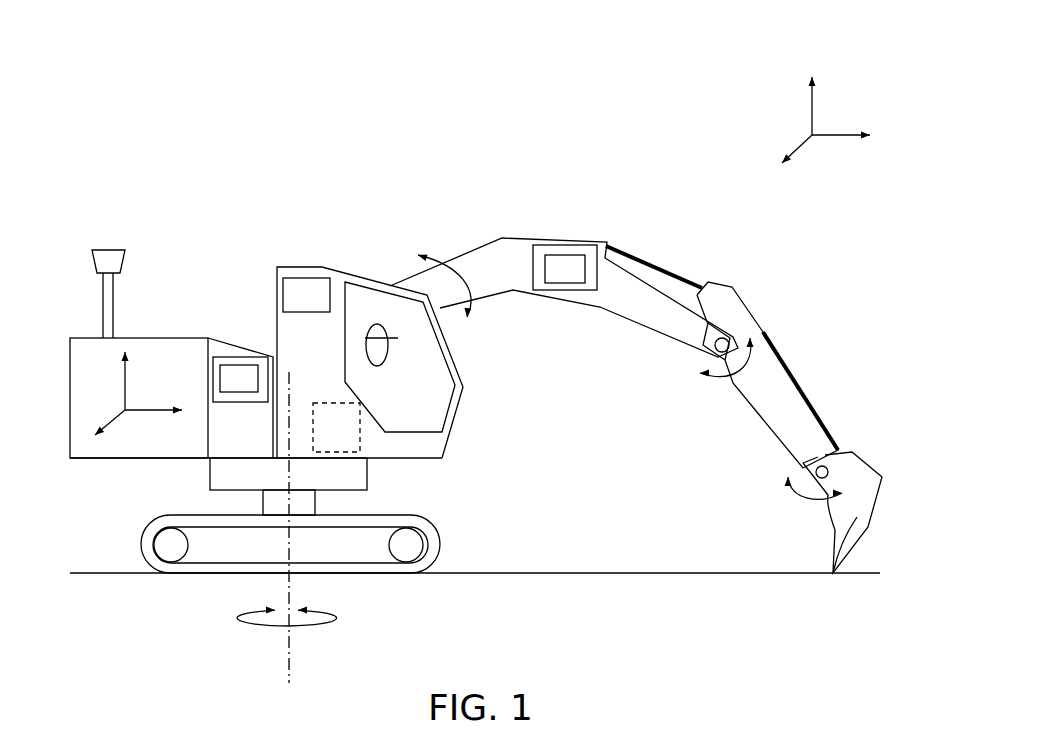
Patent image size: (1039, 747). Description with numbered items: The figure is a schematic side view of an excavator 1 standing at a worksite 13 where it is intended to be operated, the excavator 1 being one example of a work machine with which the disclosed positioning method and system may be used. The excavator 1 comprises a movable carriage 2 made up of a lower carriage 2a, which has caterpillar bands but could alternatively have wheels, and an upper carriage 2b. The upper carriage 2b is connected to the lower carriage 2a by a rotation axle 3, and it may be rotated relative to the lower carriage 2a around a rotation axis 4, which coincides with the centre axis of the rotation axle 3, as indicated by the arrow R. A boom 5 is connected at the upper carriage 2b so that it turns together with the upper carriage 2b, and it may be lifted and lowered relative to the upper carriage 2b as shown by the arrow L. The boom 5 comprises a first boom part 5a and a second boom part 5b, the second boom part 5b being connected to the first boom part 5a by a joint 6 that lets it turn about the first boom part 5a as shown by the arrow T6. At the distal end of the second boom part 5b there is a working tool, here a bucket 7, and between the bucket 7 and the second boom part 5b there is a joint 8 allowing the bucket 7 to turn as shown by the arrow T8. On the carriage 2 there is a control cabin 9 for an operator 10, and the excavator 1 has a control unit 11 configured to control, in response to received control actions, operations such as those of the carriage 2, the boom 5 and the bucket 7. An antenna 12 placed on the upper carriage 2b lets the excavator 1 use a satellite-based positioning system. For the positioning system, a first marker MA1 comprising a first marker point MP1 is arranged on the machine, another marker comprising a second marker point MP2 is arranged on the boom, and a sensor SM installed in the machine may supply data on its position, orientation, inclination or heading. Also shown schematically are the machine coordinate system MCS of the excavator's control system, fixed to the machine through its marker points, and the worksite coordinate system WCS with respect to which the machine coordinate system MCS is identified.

The excavator 1 is at (250, 123).
The movable carriage 2 is at (448, 537).
The lower carriage 2a is at (360, 547).
The upper carriage 2b is at (331, 361).
The rotation axle 3 is at (302, 502).
The rotation axis 4 is at (288, 667).
The boom 5 is at (573, 225).
The first boom part 5a is at (517, 248).
The second boom part 5b is at (722, 297).
The joint 6 is at (713, 350).
The bucket 7 is at (853, 520).
The joint 8 is at (825, 460).
The control cabin 9 is at (422, 440).
The operator 10 is at (385, 355).
The control unit 11 is at (352, 444).
The antenna 12 is at (108, 265).
The worksite 13 is at (669, 564).
The arrow R is at (283, 633).
The arrow L is at (458, 268).
The arrow T6 is at (731, 384).
The arrow T8 is at (805, 498).
The sensor SM is at (295, 283).
The first marker MA1 is at (230, 363).
The first marker point MP1 is at (243, 377).
The second marker point MP2 is at (565, 268).
The machine coordinate system MCS is at (122, 422).
The worksite coordinate system WCS is at (837, 80).